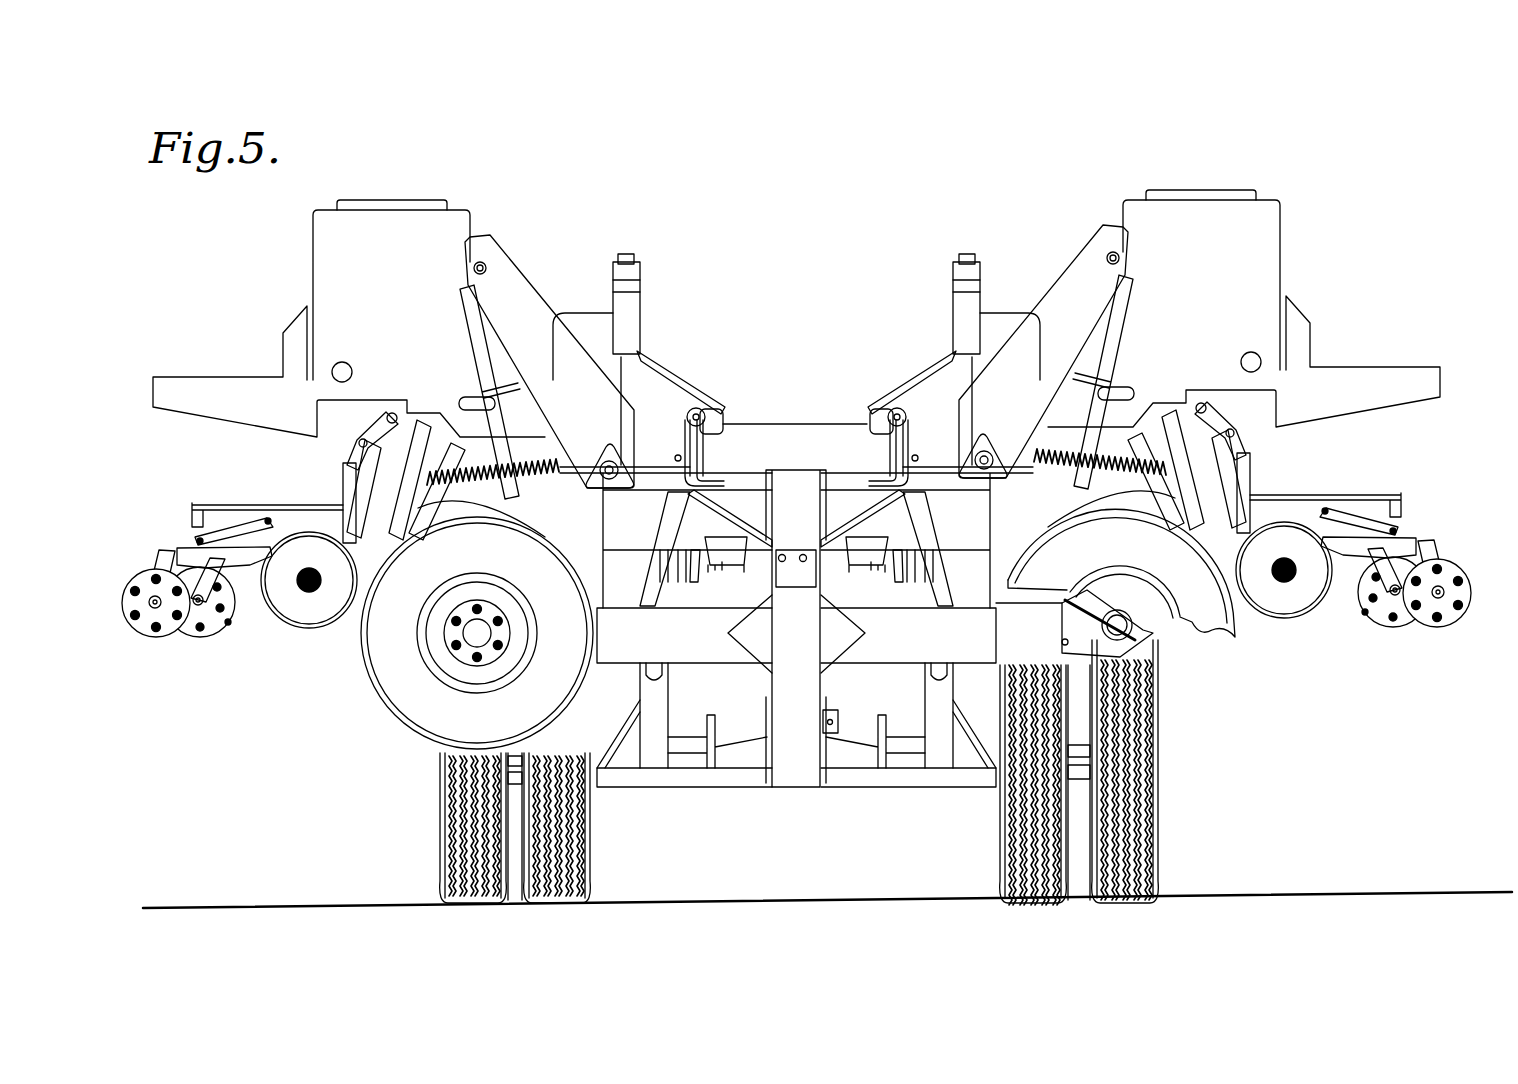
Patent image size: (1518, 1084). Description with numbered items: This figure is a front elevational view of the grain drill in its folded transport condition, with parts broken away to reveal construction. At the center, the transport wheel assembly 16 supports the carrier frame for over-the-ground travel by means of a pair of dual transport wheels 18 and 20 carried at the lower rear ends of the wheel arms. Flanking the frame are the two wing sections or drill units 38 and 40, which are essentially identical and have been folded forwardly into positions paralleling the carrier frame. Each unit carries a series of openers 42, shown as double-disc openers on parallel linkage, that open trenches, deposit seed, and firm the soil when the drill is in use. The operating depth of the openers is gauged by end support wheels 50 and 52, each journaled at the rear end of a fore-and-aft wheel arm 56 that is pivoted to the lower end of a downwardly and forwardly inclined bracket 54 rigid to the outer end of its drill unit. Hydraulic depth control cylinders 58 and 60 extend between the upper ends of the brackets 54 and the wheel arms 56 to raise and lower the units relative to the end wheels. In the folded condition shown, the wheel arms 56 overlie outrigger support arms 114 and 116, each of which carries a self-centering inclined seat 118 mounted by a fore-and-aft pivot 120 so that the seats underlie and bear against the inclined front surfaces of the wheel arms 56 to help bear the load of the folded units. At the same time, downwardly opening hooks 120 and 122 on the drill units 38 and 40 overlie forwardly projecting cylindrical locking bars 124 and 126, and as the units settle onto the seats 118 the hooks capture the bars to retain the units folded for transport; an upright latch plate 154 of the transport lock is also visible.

The transport wheel assembly 16 is at (820, 808).
The dual transport wheels 18 is at (570, 875).
The dual transport wheels 20 is at (1135, 858).
The drill unit 38 is at (261, 297).
The drill unit 40 is at (1308, 270).
The openers 42 is at (270, 618).
The end support wheel 50 is at (415, 700).
The end support wheel 52 is at (1220, 632).
The bracket 54 is at (515, 300).
The wheel arm 56 is at (590, 503).
The hydraulic depth control cylinder 58 is at (492, 372).
The hydraulic depth control cylinder 60 is at (1102, 360).
The outrigger support arm 114 is at (680, 655).
The outrigger support arm 116 is at (953, 648).
The seat 118 is at (1075, 625).
The fore-and-aft pivot / downwardly opening hook 120 is at (652, 395).
The downwardly opening hook 122 is at (935, 380).
The locking bar 124 is at (725, 410).
The locking bar 126 is at (887, 400).
The latch plate 154 is at (727, 565).